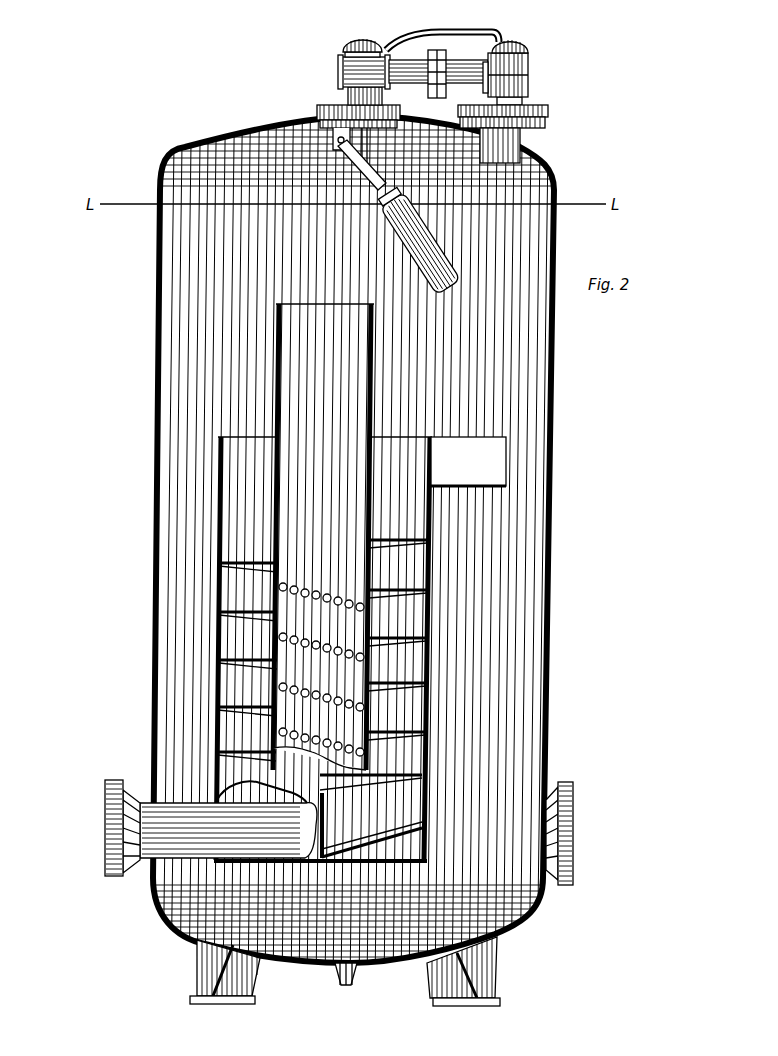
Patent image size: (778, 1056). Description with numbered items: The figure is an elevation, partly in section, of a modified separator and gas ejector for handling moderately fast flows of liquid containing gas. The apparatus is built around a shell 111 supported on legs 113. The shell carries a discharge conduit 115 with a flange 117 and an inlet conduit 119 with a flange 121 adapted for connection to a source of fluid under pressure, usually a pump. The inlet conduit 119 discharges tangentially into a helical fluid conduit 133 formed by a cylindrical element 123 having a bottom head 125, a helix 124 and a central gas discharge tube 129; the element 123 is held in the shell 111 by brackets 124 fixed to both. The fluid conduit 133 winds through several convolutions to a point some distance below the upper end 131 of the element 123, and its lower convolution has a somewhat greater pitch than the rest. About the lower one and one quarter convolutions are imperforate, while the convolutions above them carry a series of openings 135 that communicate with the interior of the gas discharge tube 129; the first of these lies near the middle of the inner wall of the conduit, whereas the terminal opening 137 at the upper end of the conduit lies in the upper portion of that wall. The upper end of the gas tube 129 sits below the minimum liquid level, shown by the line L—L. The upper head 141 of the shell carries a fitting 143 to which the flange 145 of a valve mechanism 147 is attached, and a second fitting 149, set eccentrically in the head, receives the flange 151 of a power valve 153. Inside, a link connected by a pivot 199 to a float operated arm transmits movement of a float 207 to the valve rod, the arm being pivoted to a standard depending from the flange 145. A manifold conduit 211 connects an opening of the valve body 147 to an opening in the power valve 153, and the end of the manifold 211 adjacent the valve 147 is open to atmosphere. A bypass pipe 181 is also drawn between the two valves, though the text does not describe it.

The shell 111 is at (556, 640).
The legs 113 is at (196, 964).
The discharge conduit 115 is at (548, 876).
The flange 117 is at (575, 793).
The inlet conduit 119 is at (157, 850).
The flange 121 is at (104, 800).
The cylindrical element 123 is at (428, 708).
The helix / brackets 124 is at (500, 456).
The bottom head 125 is at (363, 861).
The gas discharge tube 129 is at (375, 418).
The upper end 131 is at (413, 438).
The helical fluid conduit 133 is at (402, 833).
The openings 135 is at (426, 752).
The terminal opening 137 is at (426, 564).
The upper head 141 is at (552, 176).
The fitting 143 is at (319, 119).
The flange 145 is at (323, 104).
The valve mechanism 147 is at (339, 54).
The second fitting 149 is at (551, 123).
The flange 151 is at (546, 108).
The power valve 153 is at (533, 66).
The bypass pipe 181 is at (478, 17).
The pivot 199 is at (340, 977).
The float 207 is at (425, 281).
The manifold conduit 211 is at (486, 50).